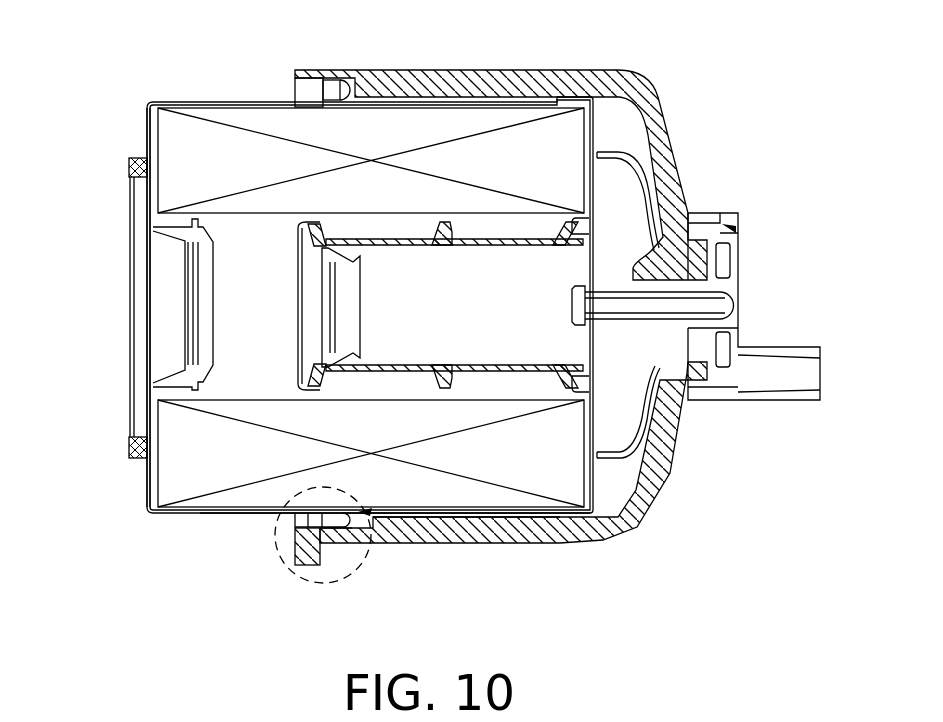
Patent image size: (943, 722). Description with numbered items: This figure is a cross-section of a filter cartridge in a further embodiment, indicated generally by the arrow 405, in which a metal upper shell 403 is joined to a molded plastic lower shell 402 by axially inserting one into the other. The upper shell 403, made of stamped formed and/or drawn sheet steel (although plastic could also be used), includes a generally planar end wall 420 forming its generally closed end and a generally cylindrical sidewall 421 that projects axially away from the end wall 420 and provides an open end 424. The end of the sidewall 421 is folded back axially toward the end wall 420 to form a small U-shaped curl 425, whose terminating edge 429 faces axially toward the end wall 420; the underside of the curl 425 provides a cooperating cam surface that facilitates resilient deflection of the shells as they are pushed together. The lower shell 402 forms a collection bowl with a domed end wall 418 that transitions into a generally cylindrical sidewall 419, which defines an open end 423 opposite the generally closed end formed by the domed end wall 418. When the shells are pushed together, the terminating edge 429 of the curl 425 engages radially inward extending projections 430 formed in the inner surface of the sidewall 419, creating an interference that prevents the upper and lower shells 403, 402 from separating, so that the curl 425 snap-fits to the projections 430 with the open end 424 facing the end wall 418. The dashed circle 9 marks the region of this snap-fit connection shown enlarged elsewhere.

The lower shell 402 is at (536, 310).
The upper shell 403 is at (322, 362).
The solenoid assembly 405 is at (358, 48).
The domed end wall 418 is at (663, 458).
The sidewall 419 is at (590, 72).
The end wall 420 is at (143, 485).
The sidewall 421 is at (213, 512).
The open end 423 is at (348, 433).
The open end 424 is at (423, 540).
The U-shaped curl 425 is at (360, 540).
The terminating edge 429 is at (296, 545).
The inward extending projections 430 is at (333, 530).
The detail circle (FIG. 9) 9 is at (298, 587).